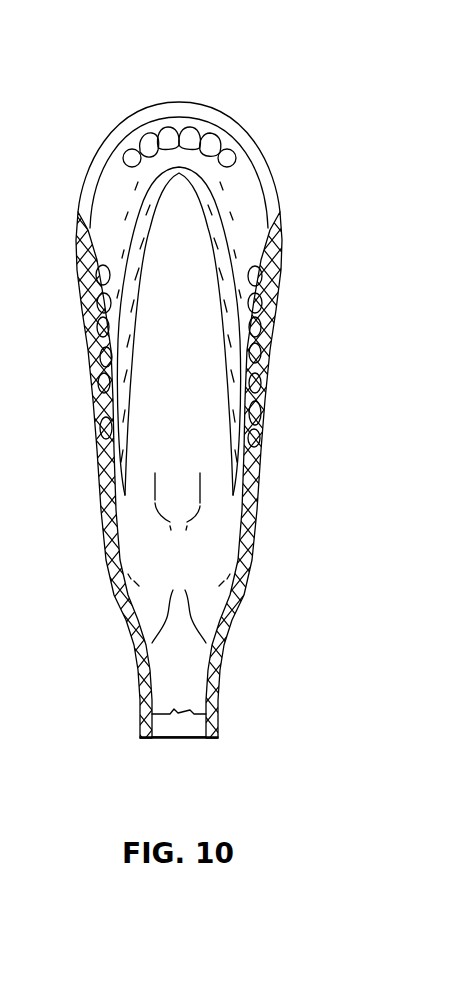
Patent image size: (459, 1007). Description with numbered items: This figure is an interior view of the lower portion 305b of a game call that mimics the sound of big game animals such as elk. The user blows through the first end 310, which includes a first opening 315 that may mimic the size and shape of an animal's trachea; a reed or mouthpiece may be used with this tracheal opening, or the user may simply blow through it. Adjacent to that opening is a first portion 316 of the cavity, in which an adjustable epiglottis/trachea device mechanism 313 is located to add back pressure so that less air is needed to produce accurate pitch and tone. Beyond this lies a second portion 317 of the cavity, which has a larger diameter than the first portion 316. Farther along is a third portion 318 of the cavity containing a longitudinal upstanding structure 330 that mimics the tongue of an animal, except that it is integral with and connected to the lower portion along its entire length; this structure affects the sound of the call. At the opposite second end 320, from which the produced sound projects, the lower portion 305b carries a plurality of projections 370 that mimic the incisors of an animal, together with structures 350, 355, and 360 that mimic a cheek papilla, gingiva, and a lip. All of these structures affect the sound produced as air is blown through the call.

The lower portion 305b is at (262, 107).
The second end 320 is at (175, 88).
The structure mimicking a lower mouth structure 360 is at (118, 147).
The plurality of projections 370 is at (150, 130).
The structure mimicking a lower mouth structure 355 is at (102, 202).
The structure mimicking a lower mouth structure 350 is at (120, 320).
The third portion of the cavity 318 is at (197, 369).
The longitudinal upstanding structure 330 is at (157, 418).
The second portion of the cavity 317 is at (197, 572).
The first portion of the cavity 316 is at (197, 684).
The adjustable epiglottis/trachea device mechanism 313 is at (175, 706).
The first end 310 is at (155, 757).
The first opening 315 is at (177, 733).